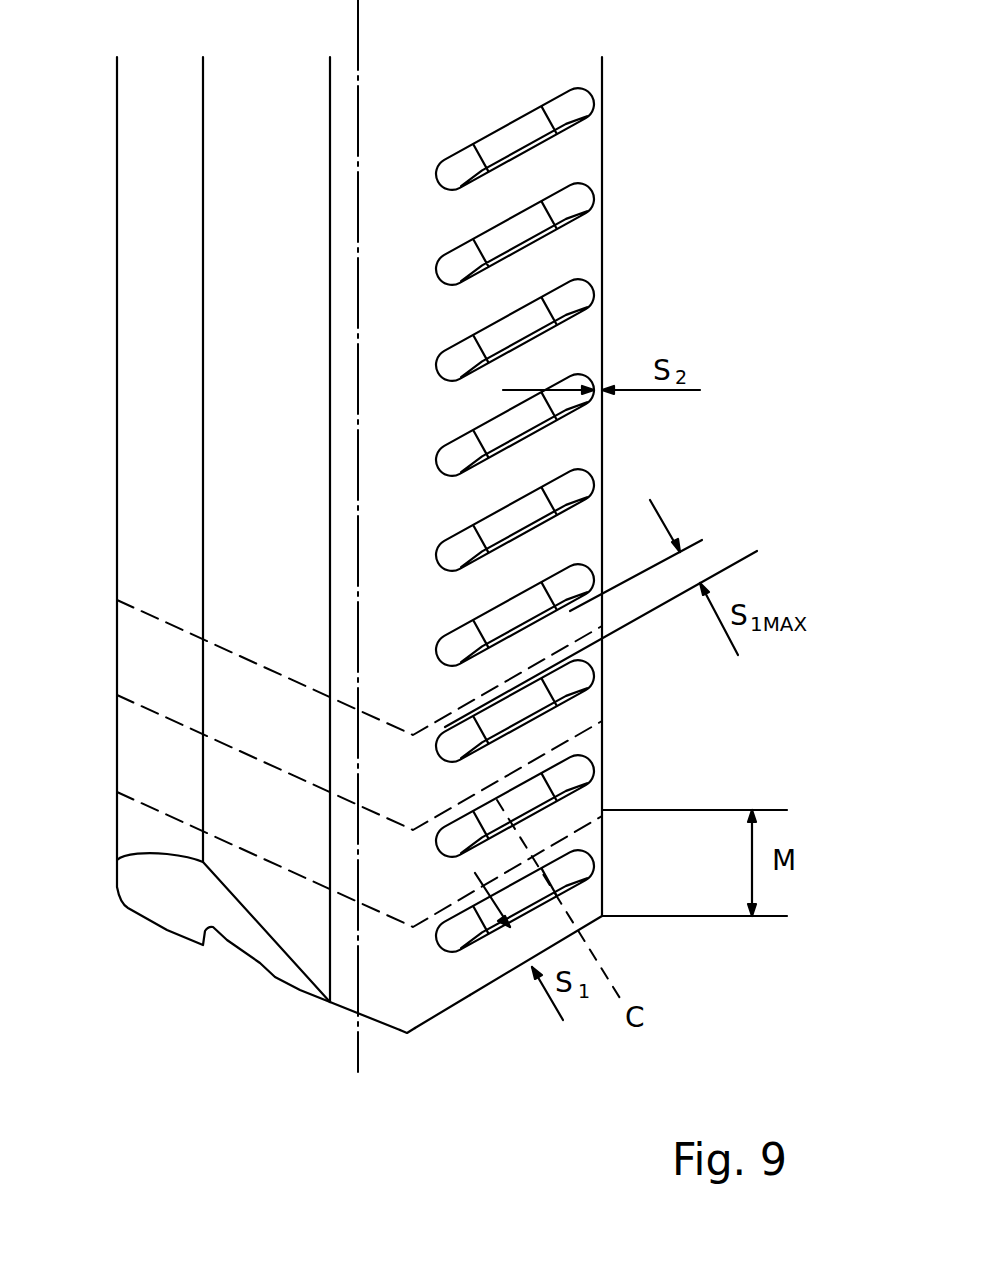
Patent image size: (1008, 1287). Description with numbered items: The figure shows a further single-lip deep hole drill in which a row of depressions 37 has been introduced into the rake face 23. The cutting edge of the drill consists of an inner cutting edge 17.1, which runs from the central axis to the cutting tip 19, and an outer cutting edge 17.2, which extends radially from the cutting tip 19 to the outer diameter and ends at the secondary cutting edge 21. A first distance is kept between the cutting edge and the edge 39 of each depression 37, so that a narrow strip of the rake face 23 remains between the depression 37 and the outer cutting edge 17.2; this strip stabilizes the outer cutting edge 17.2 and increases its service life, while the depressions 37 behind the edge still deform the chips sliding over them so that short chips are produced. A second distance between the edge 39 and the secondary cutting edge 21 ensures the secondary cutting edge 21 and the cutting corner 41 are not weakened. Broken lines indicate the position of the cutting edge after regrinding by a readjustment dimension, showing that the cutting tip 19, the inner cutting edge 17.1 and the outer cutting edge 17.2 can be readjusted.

The inner cutting edge 17.1 is at (343, 1013).
The outer cutting edge 17.2 is at (432, 1022).
The cutting tip 19 is at (408, 1033).
The secondary cutting edge 21 is at (602, 250).
The rake face 23 is at (474, 993).
The depressions 37 is at (575, 677).
The edge of the depression 39 is at (578, 880).
The cutting corner 41 is at (602, 916).